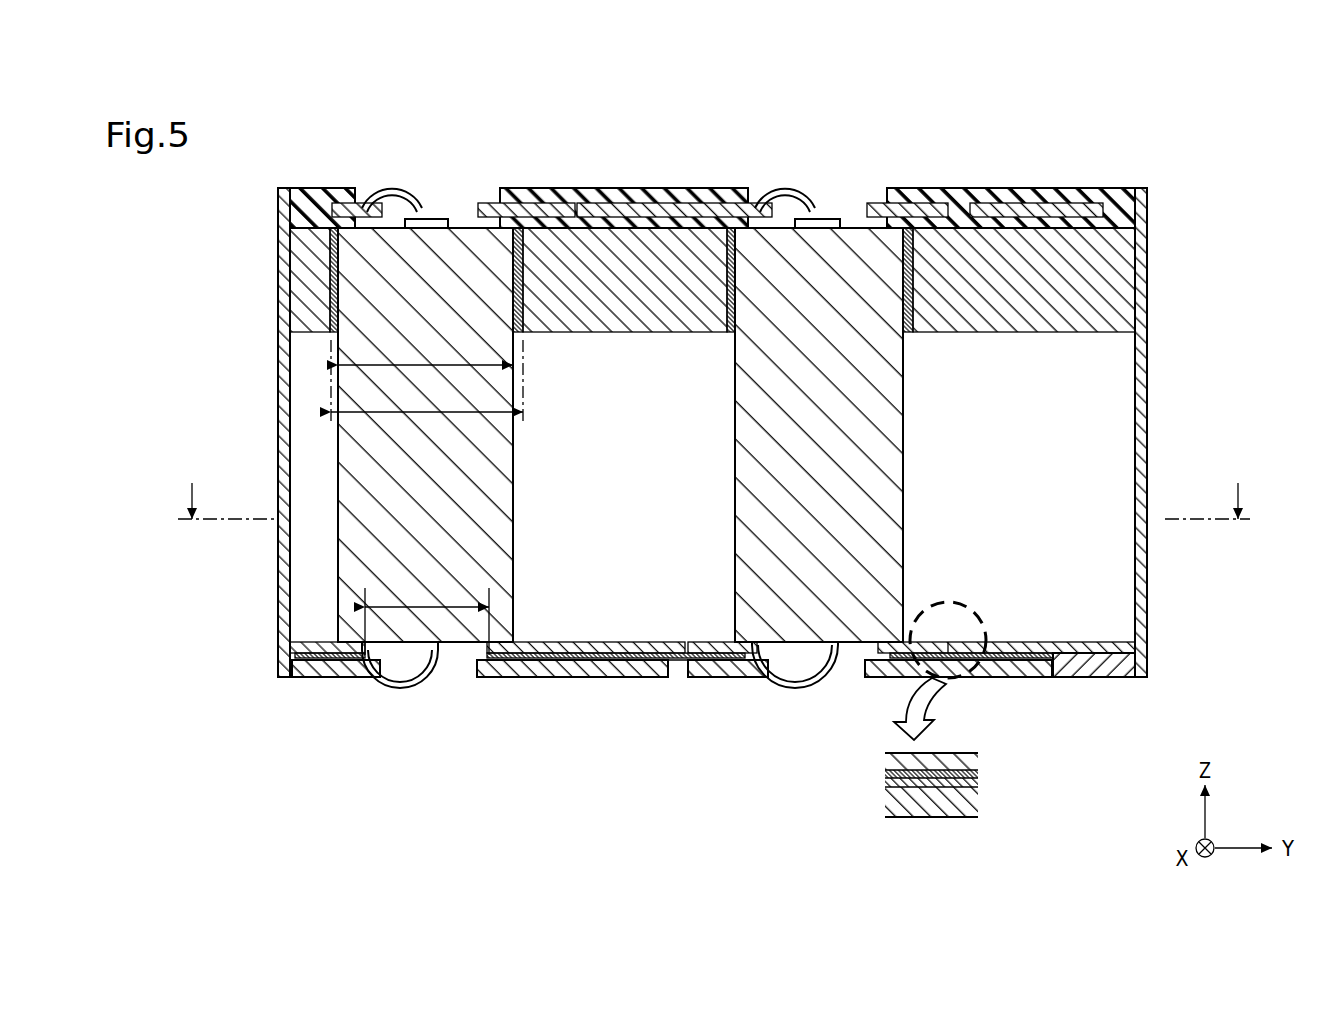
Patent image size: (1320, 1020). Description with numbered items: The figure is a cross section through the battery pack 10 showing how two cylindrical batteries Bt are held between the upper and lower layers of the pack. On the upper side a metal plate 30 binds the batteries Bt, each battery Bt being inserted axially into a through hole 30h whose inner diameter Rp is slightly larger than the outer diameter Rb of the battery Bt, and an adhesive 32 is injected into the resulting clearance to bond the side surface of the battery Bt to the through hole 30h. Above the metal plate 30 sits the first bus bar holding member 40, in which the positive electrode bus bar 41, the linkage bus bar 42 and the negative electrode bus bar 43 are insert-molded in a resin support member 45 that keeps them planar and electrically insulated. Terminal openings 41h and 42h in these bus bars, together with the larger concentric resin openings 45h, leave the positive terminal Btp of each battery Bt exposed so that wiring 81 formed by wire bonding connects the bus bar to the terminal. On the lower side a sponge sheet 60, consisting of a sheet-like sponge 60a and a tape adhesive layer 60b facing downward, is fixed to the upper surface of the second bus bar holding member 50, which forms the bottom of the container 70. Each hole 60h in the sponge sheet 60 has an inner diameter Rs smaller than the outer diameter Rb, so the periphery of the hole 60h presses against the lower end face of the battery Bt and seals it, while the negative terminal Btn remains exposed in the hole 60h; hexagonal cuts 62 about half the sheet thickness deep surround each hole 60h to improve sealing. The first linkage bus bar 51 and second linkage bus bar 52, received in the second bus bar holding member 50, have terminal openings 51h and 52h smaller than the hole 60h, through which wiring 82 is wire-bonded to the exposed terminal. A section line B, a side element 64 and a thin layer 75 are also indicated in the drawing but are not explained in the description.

The battery pack 10 is at (1190, 97).
The metal plate 30 is at (1137, 272).
The through hole 30h is at (340, 292).
The adhesive 32 is at (333, 245).
The first bus bar holding member 40 is at (1100, 188).
The positive electrode bus bar 41 is at (528, 205).
The terminal opening 41h is at (472, 203).
The linkage bus bar 42 is at (673, 190).
The terminal opening 42h is at (858, 205).
The negative electrode bus bar 43 is at (1030, 190).
The resin support member 45 is at (623, 190).
The resin opening 45h is at (498, 190).
The second bus bar holding member 50 is at (1108, 680).
The first linkage bus bar 51 is at (578, 677).
The terminal opening 51h is at (479, 677).
The second linkage bus bar 52 is at (715, 677).
The terminal opening 52h is at (862, 680).
The sponge sheet 60 is at (1090, 640).
The sponge 60a is at (975, 760).
The tape adhesive layer 60b is at (975, 775).
The hole 60h is at (470, 648).
The cut 62 is at (1147, 430).
The side insulating film 64 is at (280, 425).
The container 70 is at (1185, 352).
The adhesive layer 75 is at (975, 785).
The wiring 81 is at (392, 190).
The wiring 82 is at (397, 690).
The positive terminal Btp is at (447, 218).
The negative terminal Btn is at (458, 648).
The battery Bt is at (335, 588).
The outer diameter Rb is at (425, 353).
The inner diameter Rp is at (427, 382).
The inner diameter Rs is at (427, 619).
The section line B- B is at (714, 489).